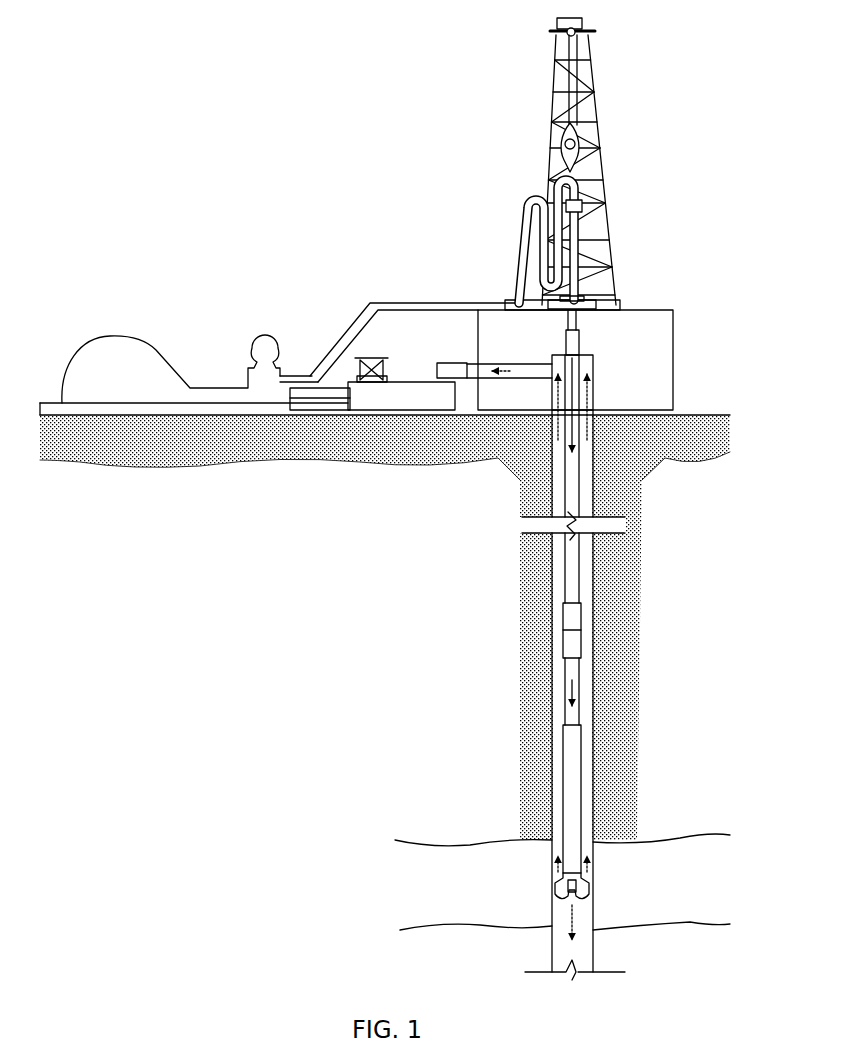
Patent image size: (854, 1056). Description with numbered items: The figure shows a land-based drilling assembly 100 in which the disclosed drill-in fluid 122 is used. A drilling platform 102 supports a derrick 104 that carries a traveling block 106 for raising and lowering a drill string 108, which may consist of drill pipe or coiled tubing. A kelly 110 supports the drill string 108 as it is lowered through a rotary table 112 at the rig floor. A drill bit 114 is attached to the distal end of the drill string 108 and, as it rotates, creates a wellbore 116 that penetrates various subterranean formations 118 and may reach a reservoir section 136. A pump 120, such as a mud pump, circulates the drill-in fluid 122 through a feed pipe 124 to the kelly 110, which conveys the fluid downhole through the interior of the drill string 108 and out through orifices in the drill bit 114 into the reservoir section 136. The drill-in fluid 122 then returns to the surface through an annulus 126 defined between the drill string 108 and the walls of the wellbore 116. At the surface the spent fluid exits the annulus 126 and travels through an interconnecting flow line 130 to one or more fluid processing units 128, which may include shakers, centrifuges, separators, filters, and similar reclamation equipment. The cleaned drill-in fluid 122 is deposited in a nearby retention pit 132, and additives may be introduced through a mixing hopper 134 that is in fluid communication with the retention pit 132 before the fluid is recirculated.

The drilling assembly 100 is at (342, 81).
The drilling platform 102 is at (676, 341).
The derrick 104 is at (595, 78).
The traveling block 106 is at (580, 135).
The drill string 108 is at (577, 466).
The kelly 110 is at (580, 235).
The rotary table 112 is at (586, 300).
The drill bit 114 is at (591, 894).
The wellbore 116 is at (594, 610).
The subterranean formations 118 is at (466, 557).
The pump 120 is at (123, 387).
The drill-in fluid 122 is at (318, 370).
The feed pipe 124 is at (396, 303).
The annulus 126 is at (587, 676).
The fluid processing units 128 is at (450, 362).
The flow line 130 is at (545, 378).
The retention pit 132 is at (422, 405).
The mixing hopper 134 is at (373, 357).
The reservoir section 136 is at (450, 858).